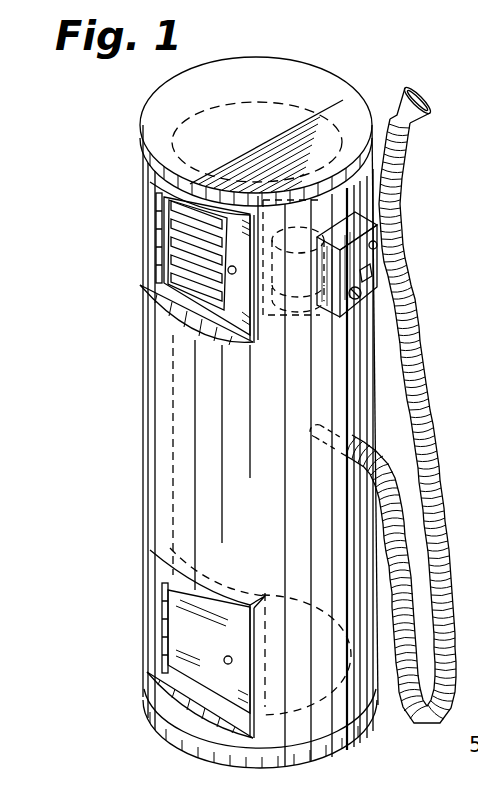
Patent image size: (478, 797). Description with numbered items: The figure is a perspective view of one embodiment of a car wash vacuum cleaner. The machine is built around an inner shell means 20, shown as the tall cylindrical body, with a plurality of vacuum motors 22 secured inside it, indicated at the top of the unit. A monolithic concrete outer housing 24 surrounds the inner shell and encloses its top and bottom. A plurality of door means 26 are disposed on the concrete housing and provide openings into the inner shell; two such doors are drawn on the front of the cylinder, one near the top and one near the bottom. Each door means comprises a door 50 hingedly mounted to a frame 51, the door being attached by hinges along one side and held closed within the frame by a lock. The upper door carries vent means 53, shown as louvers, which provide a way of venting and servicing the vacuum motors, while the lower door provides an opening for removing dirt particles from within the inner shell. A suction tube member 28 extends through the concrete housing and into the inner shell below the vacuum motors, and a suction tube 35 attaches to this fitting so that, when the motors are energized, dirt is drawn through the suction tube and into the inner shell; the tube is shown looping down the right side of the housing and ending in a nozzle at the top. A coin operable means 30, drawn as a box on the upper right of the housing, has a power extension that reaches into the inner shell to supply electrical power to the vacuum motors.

The inner shell means 20 is at (344, 96).
The vacuum motors 22 is at (310, 178).
The monolithic concrete outer housing 24 is at (203, 755).
The door means 26 is at (171, 489).
The suction tube member 28 is at (337, 447).
The coin operable means 30 is at (371, 288).
The suction tube 35 is at (415, 356).
The door 50 is at (233, 312).
The frame 51 is at (245, 337).
The vent means 53 is at (197, 280).